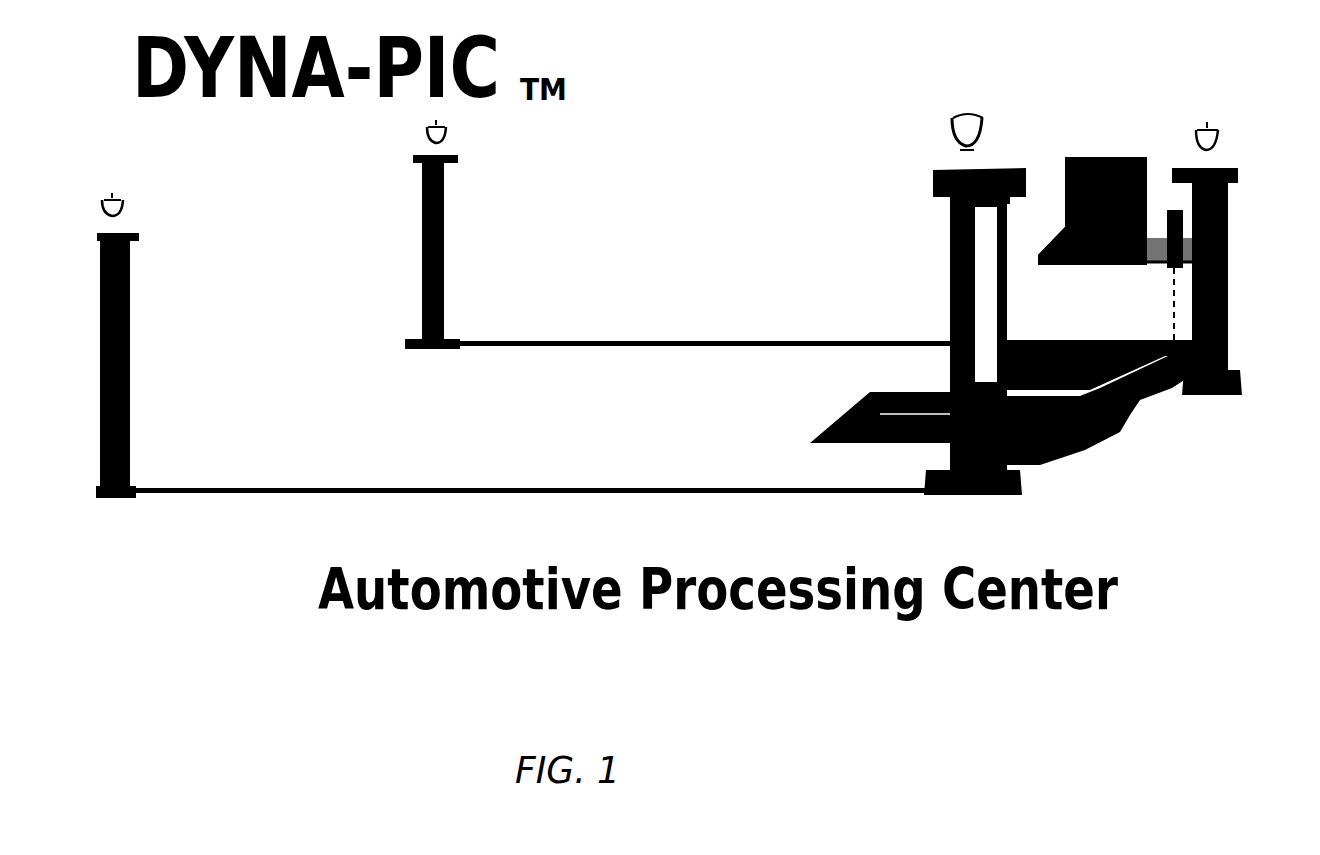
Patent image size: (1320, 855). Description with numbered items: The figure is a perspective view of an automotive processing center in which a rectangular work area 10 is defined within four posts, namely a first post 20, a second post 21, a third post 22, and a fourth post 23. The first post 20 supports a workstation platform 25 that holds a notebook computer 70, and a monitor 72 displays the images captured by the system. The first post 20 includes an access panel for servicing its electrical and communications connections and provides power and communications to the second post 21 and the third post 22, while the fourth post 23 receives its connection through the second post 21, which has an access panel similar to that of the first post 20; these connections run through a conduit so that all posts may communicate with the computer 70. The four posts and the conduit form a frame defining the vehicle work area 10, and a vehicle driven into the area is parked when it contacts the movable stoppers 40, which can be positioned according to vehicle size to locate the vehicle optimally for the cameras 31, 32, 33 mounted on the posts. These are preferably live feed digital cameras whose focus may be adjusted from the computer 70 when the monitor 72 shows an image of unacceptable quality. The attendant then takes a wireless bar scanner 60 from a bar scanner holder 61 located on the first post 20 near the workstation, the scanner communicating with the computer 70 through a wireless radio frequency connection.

The rectangular work area 10 is at (515, 446).
The first post 20 is at (1240, 312).
The second post 21 is at (948, 275).
The third post 22 is at (446, 211).
The fourth post 23 is at (137, 342).
The workstation platform 25 is at (1150, 260).
The camera 31 is at (946, 130).
The camera 32 is at (456, 131).
The camera 33 is at (137, 212).
The stoppers 40 is at (831, 427).
The wireless bar scanner 60 is at (1168, 192).
The bar scanner holder 61 is at (1172, 306).
The notebook computer 70 is at (1058, 247).
The monitor 72 is at (1128, 138).